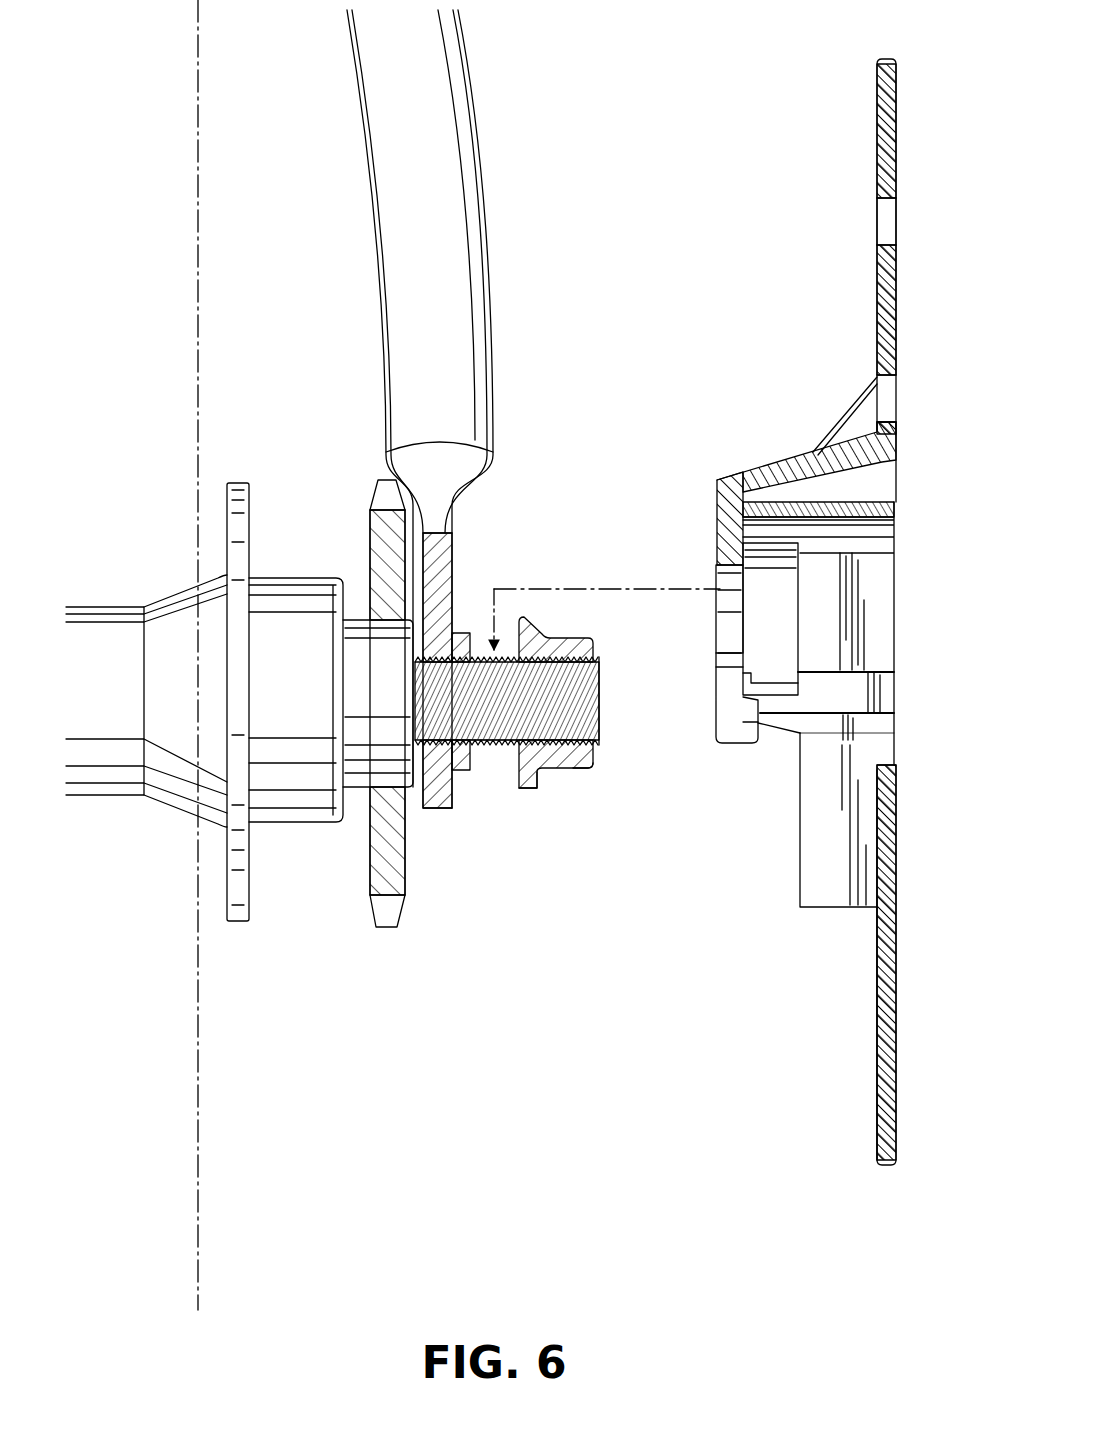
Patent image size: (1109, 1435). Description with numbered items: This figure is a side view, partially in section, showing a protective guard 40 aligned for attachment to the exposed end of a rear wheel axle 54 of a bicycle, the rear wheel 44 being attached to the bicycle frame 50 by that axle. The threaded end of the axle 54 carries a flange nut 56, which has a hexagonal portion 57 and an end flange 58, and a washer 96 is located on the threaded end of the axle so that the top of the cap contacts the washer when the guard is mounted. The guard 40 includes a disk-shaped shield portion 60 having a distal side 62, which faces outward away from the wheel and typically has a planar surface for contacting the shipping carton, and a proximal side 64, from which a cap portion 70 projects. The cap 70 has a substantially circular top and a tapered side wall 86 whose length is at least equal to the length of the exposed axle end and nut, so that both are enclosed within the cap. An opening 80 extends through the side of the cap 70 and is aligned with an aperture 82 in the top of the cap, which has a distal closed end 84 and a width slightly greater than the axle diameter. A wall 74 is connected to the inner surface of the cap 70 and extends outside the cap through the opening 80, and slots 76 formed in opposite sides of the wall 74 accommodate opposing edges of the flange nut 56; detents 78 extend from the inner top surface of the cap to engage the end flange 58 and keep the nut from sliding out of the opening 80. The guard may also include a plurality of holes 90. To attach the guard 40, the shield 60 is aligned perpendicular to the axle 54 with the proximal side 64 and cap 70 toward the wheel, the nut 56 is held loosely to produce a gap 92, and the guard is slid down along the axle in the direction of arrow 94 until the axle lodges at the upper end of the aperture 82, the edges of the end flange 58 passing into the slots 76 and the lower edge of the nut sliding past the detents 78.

The protective guard 40 is at (780, 331).
The rear wheel 44 is at (203, 232).
The bicycle frame 50 is at (483, 262).
The rear wheel axle 54 is at (601, 702).
The flange nut 56 is at (558, 636).
The hexagonal portion 57 is at (574, 770).
The end flange 58 is at (536, 789).
The shield portion 60 is at (885, 58).
The distal side 62 is at (897, 1065).
The proximal side 64 is at (877, 1065).
The cap portion 70 is at (714, 476).
The wall 74 is at (817, 863).
The slots 76 is at (771, 612).
The detents 78 is at (757, 742).
The opening 80 is at (822, 748).
The aperture 82 is at (728, 682).
The closed end 84 is at (732, 568).
The tapered side wall 86 is at (784, 470).
The holes 90 is at (877, 227).
The gap 92 is at (498, 760).
The arrow 94 is at (494, 589).
The washer 96 is at (470, 772).